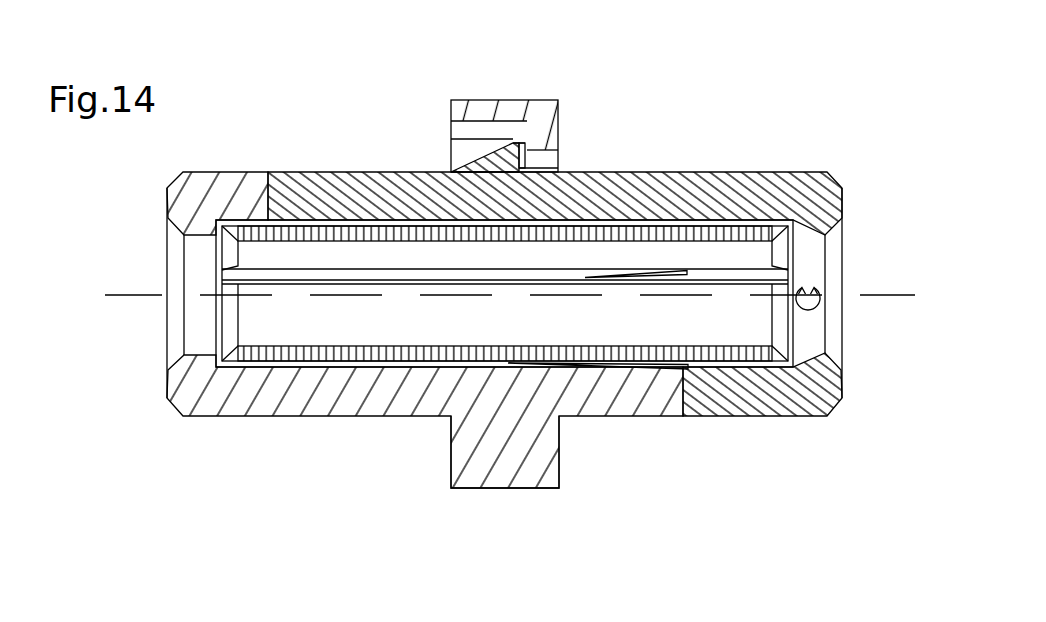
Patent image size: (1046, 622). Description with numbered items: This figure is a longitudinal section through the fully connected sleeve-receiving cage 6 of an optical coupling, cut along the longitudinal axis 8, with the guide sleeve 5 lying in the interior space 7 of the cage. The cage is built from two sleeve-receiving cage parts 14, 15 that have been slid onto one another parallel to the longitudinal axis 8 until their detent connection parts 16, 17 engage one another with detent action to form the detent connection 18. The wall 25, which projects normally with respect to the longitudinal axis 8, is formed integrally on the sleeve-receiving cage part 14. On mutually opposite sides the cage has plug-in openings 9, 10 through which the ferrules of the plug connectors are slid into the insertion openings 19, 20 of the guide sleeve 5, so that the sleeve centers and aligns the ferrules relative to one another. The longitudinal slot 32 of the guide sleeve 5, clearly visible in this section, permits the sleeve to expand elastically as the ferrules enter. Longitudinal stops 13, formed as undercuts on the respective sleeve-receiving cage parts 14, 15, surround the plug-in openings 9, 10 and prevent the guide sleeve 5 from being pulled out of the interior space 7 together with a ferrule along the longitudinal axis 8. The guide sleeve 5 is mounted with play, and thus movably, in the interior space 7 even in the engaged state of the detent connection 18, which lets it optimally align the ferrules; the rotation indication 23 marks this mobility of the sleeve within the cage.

The guide sleeve 5 is at (717, 232).
The sleeve-receiving cage 6 is at (652, 170).
The interior space 7 is at (632, 295).
The longitudinal axis 8 is at (900, 294).
The plug-in opening 9 is at (163, 248).
The plug-in opening 10 is at (832, 320).
The longitudinal stop 13 is at (215, 225).
The sleeve-receiving cage part 14 is at (333, 405).
The sleeve-receiving cage part 15 is at (803, 187).
The detent connection part 16 is at (526, 143).
The detent connection part 17 is at (510, 152).
The detent connection 18 is at (518, 141).
The insertion opening 19 is at (232, 322).
The insertion opening 20 is at (776, 324).
The rotation direction 23 is at (818, 283).
The wall 25 is at (492, 470).
The longitudinal slot 32 is at (270, 275).